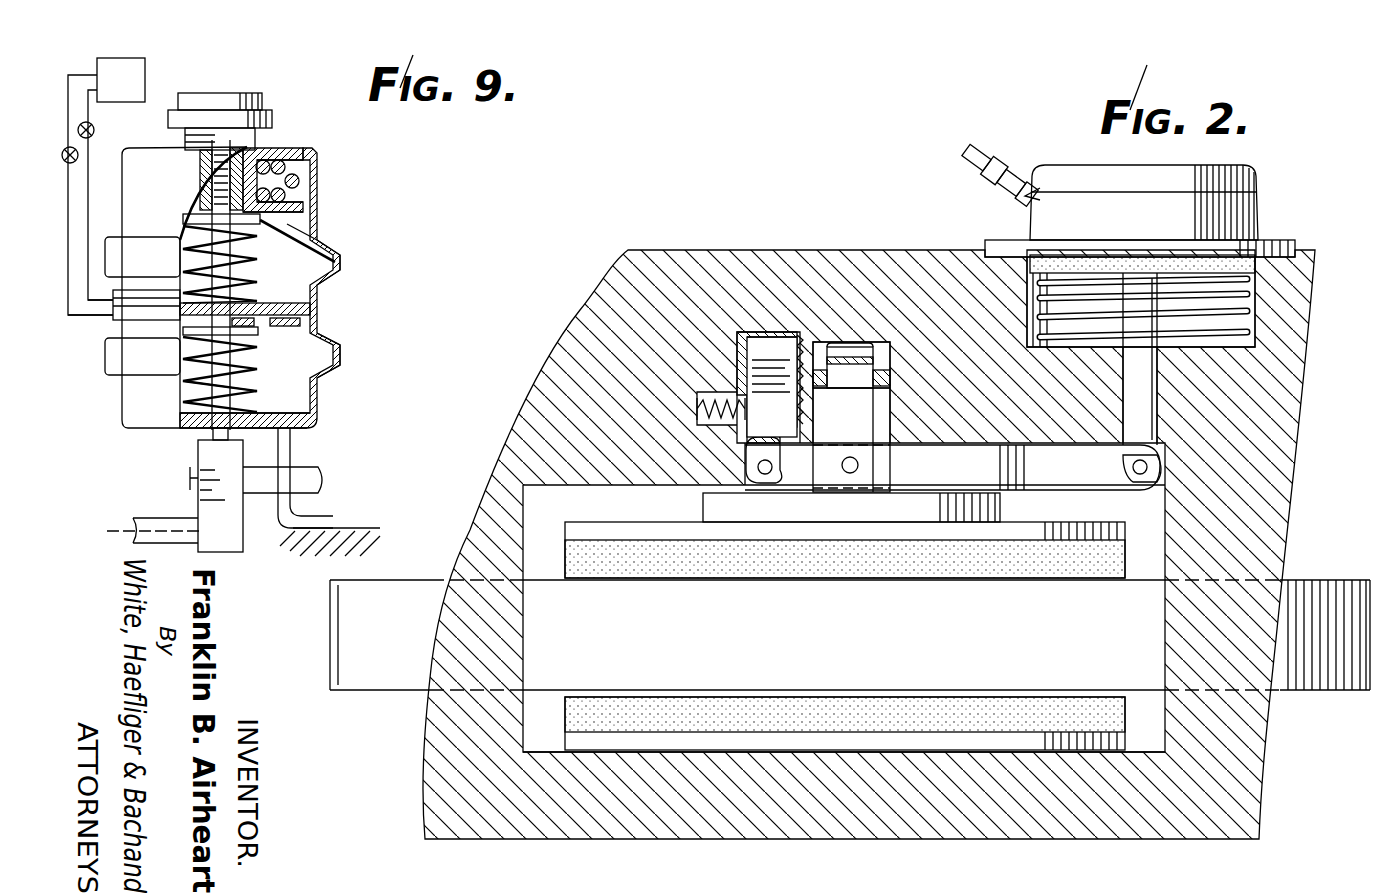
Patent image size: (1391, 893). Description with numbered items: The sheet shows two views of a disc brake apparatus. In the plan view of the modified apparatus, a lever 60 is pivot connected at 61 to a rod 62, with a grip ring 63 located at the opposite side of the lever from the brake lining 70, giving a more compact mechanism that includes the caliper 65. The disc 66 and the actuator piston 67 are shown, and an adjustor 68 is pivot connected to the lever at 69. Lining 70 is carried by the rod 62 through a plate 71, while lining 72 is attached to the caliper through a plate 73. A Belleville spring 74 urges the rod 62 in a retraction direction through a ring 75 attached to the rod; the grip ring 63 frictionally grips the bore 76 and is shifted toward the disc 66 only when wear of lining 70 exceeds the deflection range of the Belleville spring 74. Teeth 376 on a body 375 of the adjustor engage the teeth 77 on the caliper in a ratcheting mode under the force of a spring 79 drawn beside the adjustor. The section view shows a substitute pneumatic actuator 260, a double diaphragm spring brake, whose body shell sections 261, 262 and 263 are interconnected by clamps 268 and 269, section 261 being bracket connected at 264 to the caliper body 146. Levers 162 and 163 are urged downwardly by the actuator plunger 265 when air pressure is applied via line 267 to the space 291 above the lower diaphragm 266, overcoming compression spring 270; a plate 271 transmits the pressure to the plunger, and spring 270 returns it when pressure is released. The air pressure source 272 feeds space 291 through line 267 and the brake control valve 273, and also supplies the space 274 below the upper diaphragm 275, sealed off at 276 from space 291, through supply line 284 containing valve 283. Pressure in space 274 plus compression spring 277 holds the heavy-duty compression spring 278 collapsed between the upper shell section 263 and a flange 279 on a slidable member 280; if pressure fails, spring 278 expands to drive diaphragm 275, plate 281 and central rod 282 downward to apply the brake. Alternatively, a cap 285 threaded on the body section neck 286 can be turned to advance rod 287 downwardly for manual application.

In FIG. 9, the source of air pressure 272 is at (138, 90).
In FIG. 9, the valve 283 is at (93, 127).
In FIG. 9, the brake control valve 273 is at (78, 153).
In FIG. 9, the cap 285 is at (234, 97).
In FIG. 9, the body section neck 286 is at (185, 139).
In FIG. 9, the rod 287 is at (213, 164).
In FIG. 9, the supply line 284 is at (88, 190).
In FIG. 9, the central rod 282 is at (142, 257).
In FIG. 9, the lower diaphragm 266 is at (142, 356).
In FIG. 9, the line 267 is at (110, 330).
In FIG. 9, the slidable member 280 is at (268, 142).
In FIG. 9, the flange 279 is at (300, 186).
In FIG. 9, the heavy-duty compression spring 278 is at (300, 152).
In FIG. 9, the upper shell section 263 is at (320, 166).
In FIG. 9, the body shell section 261 is at (318, 415).
In FIG. 9, the clamp 269 is at (341, 266).
In FIG. 9, the clamp 268 is at (341, 352).
In FIG. 9, the space 274 is at (322, 232).
In FIG. 9, the upper diaphragm 275 is at (312, 210).
In FIG. 9, the modified pneumatic actuator 260 is at (396, 255).
In FIG. 9, the body shell section 262 is at (318, 300).
In FIG. 9, the space 291 is at (305, 324).
In FIG. 9, the plate 281 is at (183, 218).
In FIG. 9, the compression spring 277 is at (256, 268).
In FIG. 9, the seal 276 is at (256, 296).
In FIG. 9, the plate 271 is at (250, 334).
In FIG. 9, the compression spring 270 is at (318, 394).
In FIG. 9, the actuator plunger 265 is at (214, 440).
In FIG. 9, the lever 163 is at (310, 479).
In FIG. 9, the bracket connection 264 is at (291, 448).
In FIG. 9, the caliper body 146 is at (352, 545).
In FIG. 9, the lever 162 is at (152, 530).
In FIG. 2, the caliper 65 is at (869, 544).
In FIG. 2, the disc 66 is at (850, 635).
In FIG. 2, the plate 71 is at (640, 525).
In FIG. 2, the brake lining 70 is at (583, 556).
In FIG. 2, the lining 72 is at (1135, 718).
In FIG. 2, the plate 73 is at (880, 752).
In FIG. 2, the lever 60 is at (952, 467).
In FIG. 2, the pivot connection 69 is at (757, 466).
In FIG. 2, the rod 62 is at (862, 432).
In FIG. 2, the pivot connection 61 is at (859, 466).
In FIG. 2, the ring 75 is at (882, 343).
In FIG. 2, the bore 76 is at (826, 343).
In FIG. 2, the Belleville spring 74 is at (883, 361).
In FIG. 2, the grip ring 63 is at (889, 380).
In FIG. 2, the adjustor 68 is at (740, 340).
In FIG. 2, the teeth 77 is at (797, 352).
In FIG. 2, the body 375 is at (768, 378).
In FIG. 2, the teeth 376 is at (795, 345).
In FIG. 2, the spring 79 is at (697, 408).
In FIG. 2, the actuator piston 67 is at (1258, 268).